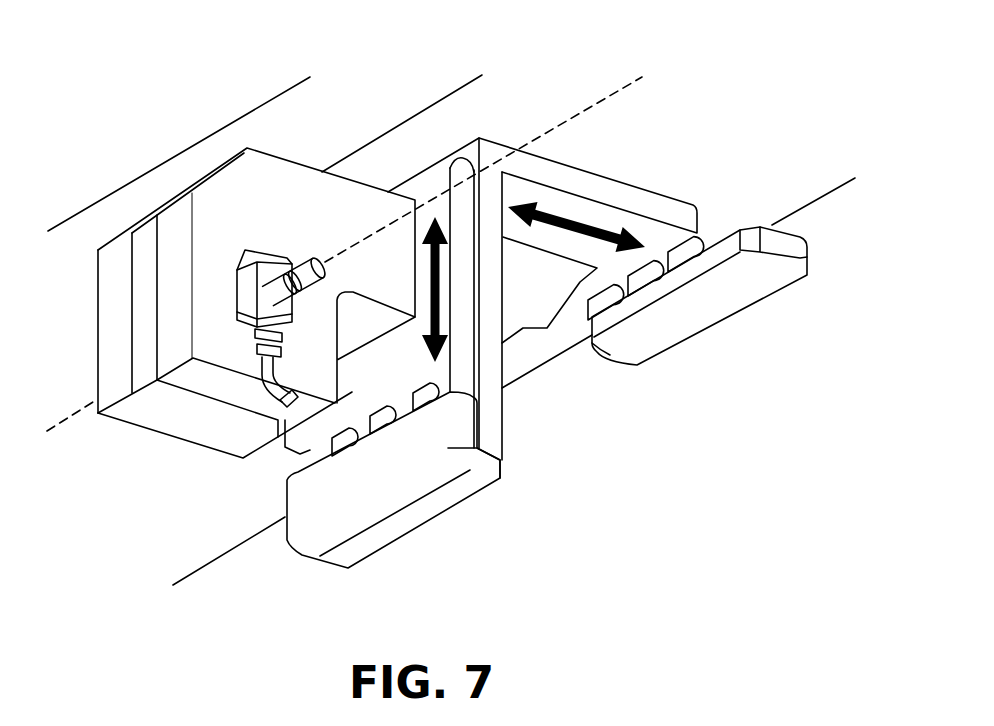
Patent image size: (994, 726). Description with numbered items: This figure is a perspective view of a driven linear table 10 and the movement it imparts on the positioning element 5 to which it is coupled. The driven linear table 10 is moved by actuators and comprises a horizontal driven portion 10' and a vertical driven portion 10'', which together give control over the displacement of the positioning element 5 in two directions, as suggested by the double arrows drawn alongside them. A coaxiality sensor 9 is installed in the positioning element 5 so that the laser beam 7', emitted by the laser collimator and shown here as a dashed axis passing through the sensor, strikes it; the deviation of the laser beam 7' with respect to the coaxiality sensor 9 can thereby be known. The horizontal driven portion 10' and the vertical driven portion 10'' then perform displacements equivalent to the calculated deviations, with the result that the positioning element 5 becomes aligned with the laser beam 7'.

The positioning element 5 is at (242, 207).
The laser beam 7' is at (344, 217).
The coaxiality sensor 9 is at (245, 315).
The driven linear table 10 is at (589, 268).
The horizontal driven portion 10' is at (699, 323).
The vertical driven portion 10'' is at (408, 482).